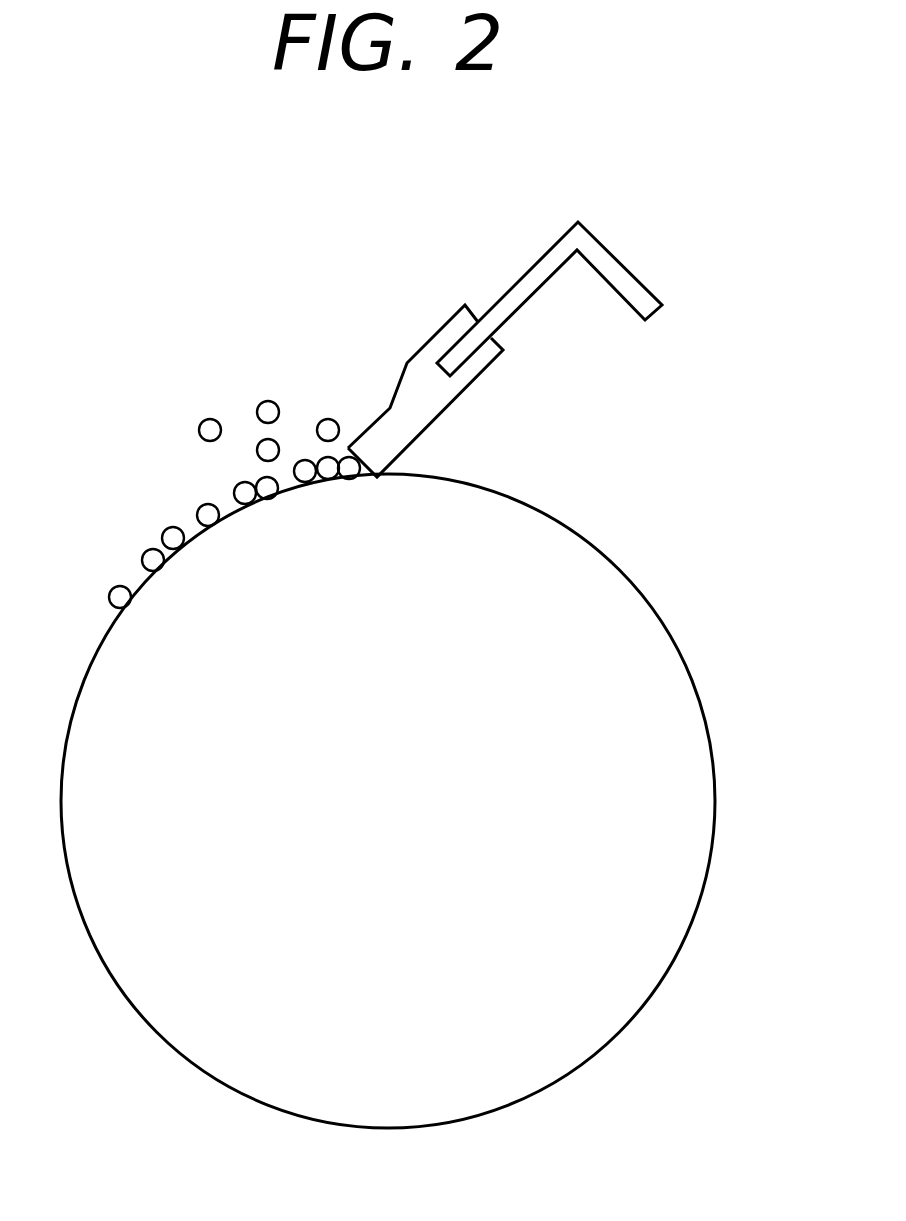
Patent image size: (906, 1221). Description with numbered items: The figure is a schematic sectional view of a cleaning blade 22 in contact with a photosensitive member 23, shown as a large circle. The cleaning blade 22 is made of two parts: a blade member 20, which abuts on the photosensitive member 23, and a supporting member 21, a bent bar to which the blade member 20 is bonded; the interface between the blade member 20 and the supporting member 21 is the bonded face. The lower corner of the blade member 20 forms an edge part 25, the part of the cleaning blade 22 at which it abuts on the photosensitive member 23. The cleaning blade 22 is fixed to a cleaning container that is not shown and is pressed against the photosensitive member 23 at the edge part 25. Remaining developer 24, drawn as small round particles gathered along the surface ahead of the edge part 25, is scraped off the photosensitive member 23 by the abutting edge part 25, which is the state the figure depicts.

The blade member 20 is at (421, 373).
The supporting member 21 is at (512, 302).
The cleaning blade 22 is at (477, 200).
The photosensitive member 23 is at (640, 640).
The remaining developer 24 is at (204, 422).
The edge part 25 is at (378, 476).